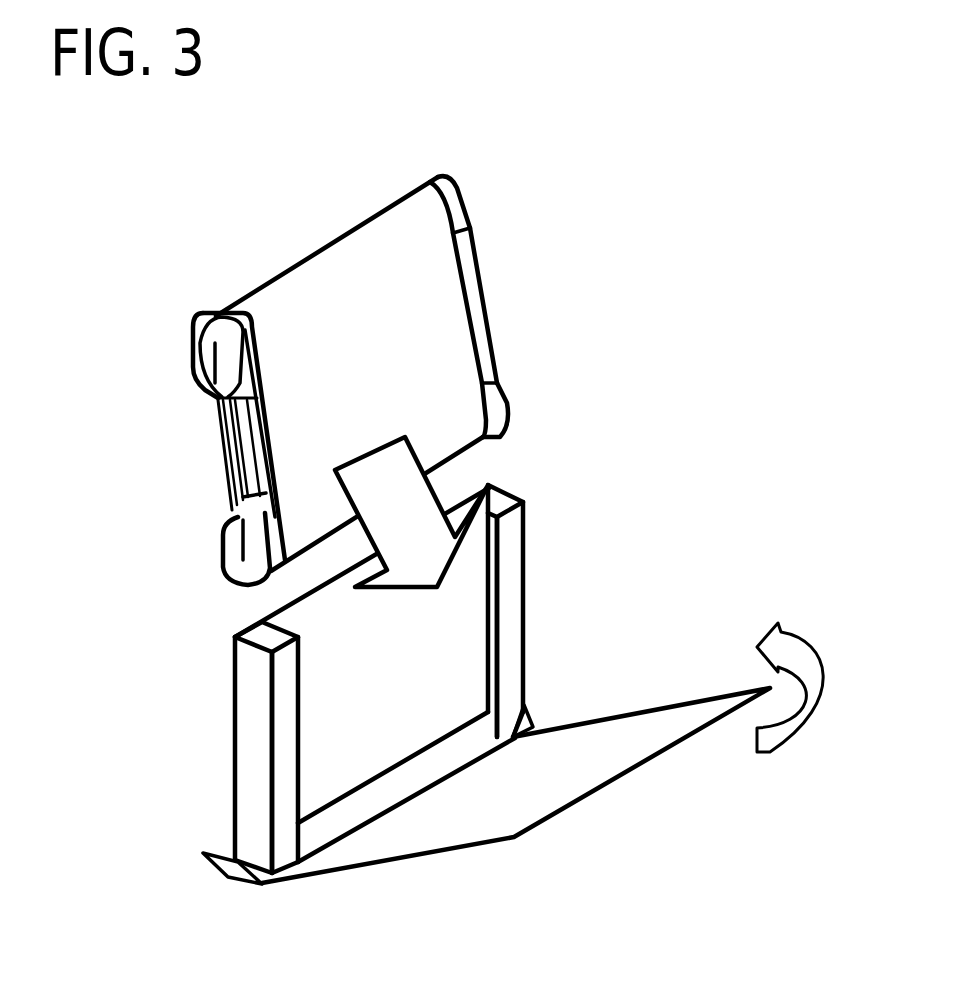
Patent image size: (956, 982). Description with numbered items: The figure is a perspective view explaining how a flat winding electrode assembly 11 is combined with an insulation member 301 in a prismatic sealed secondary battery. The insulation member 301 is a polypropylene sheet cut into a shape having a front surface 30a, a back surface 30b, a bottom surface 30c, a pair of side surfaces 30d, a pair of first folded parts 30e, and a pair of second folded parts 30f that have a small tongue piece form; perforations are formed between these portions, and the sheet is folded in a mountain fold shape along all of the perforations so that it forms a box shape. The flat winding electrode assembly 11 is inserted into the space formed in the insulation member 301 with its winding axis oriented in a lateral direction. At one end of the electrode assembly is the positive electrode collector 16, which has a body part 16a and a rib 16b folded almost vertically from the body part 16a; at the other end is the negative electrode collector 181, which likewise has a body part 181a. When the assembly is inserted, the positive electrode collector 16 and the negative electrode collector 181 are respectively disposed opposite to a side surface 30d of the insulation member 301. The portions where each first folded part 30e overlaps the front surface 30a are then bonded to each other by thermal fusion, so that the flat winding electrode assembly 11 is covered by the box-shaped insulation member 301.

The flat winding electrode assembly 11 is at (285, 302).
The positive electrode collector 16 is at (243, 449).
The body part 16a is at (263, 380).
The rib 16b is at (208, 433).
The negative electrode collector 181 is at (500, 300).
The body part 181a is at (474, 258).
The insulation member 301 is at (438, 656).
The front surface 30a is at (518, 808).
The back surface 30b is at (343, 635).
The bottom surface 30c is at (343, 813).
The side surface 30d is at (503, 503).
The first folded part 30e is at (512, 630).
The second folded part 30f is at (217, 870).